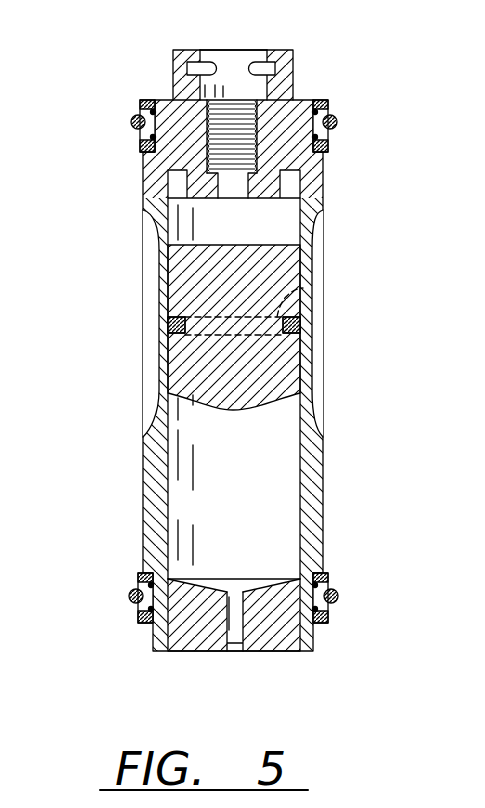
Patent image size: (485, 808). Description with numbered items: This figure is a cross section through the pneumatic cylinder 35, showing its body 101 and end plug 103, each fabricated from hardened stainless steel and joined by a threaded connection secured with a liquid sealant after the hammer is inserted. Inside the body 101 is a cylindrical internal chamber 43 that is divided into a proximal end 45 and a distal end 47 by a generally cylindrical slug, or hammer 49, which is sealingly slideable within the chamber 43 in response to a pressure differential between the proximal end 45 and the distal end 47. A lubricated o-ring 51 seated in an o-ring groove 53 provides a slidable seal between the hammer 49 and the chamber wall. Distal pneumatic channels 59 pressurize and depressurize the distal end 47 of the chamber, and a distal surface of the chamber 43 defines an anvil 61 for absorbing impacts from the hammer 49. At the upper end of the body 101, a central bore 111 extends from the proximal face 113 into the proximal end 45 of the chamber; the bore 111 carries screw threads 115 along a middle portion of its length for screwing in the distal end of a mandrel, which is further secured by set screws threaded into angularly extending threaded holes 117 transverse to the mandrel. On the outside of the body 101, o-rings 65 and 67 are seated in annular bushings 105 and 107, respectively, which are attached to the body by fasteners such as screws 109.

The pneumatic cylinder 35 is at (120, 252).
The cylindrical internal chamber 43 is at (290, 221).
The proximal end 45 is at (253, 232).
The distal end 47 is at (203, 477).
The hammer 49 is at (282, 364).
The o-ring 51 is at (168, 320).
The o-ring groove 53 is at (303, 287).
The distal pneumatic channels 59 is at (236, 652).
The anvil 61 is at (257, 582).
The o-ring 65 is at (340, 119).
The o-ring 67 is at (337, 597).
The body 101 is at (280, 424).
The end plug 103 is at (203, 651).
The annular bushing 105 is at (335, 145).
The annular bushing 107 is at (331, 620).
The screws 109 is at (133, 112).
The central bore 111 is at (248, 58).
The proximal face 113 is at (193, 57).
The screw threads 115 is at (259, 128).
The threaded holes 117 is at (210, 55).